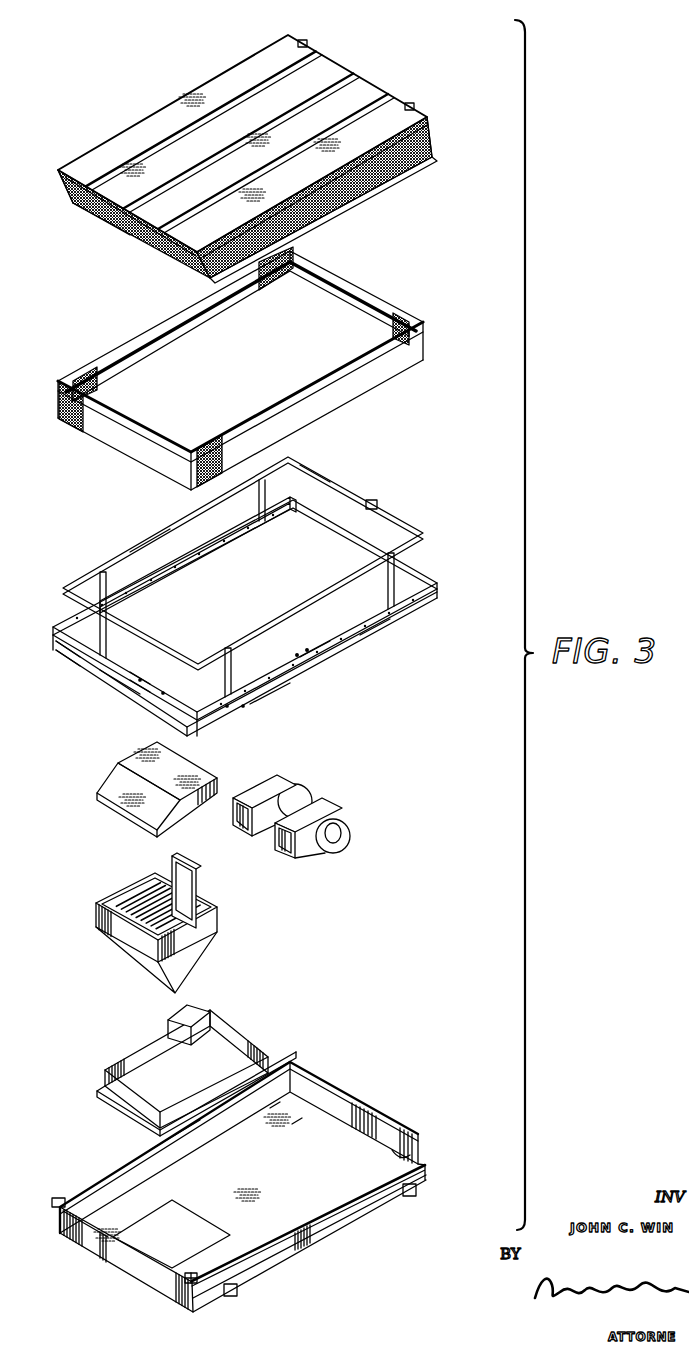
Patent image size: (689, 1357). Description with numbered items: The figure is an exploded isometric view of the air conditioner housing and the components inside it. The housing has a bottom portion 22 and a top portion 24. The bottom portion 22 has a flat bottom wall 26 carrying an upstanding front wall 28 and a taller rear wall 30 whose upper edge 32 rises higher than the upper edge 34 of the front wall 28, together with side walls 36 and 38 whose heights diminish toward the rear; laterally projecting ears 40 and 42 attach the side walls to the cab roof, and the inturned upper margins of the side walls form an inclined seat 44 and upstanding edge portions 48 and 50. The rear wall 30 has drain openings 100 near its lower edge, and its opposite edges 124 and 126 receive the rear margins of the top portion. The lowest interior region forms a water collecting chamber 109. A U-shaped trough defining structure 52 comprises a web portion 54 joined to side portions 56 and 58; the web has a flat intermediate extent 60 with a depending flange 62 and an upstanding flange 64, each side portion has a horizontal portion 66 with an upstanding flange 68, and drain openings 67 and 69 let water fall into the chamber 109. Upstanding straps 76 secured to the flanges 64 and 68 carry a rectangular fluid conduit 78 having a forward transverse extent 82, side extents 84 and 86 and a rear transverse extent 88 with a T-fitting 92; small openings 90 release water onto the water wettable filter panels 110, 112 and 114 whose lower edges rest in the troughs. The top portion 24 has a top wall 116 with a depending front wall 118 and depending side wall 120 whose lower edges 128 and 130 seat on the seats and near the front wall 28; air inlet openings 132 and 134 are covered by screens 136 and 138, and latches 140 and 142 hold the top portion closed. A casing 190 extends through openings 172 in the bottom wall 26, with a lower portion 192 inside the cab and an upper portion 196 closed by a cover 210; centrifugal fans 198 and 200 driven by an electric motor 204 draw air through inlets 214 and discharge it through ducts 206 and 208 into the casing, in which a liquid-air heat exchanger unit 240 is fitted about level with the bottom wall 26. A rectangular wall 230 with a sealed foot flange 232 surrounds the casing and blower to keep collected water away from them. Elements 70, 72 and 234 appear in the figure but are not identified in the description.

The bottom portion 22 is at (332, 1130).
The top portion 24 is at (360, 92).
The bottom wall 26 is at (305, 1112).
The front wall 28 is at (71, 1243).
The rear wall 30 is at (385, 1127).
The upper edge of rear wall 32 is at (372, 1112).
The upper edge of front wall 34 is at (101, 1242).
The side wall 36 is at (270, 1260).
The side wall 38 is at (117, 1190).
The laterally projecting ear 40 is at (232, 1297).
The laterally projecting ear 42 is at (412, 1197).
The inclined seat 44 is at (313, 1232).
The upstanding edge portion 48 is at (293, 1230).
The upstanding edge portion 50 is at (195, 1143).
The channel or trough defining structure 52 is at (332, 654).
The web or front end portion 54 is at (121, 688).
The side portion 56 is at (270, 690).
The side portion 58 is at (196, 556).
The flat horizontal intermediate extent 60 is at (93, 661).
The depending flange 62 is at (73, 656).
The upstanding flange 64 is at (140, 667).
The horizontal portion 66 is at (373, 622).
The drain openings 67 is at (163, 704).
The upstanding flange 68 is at (307, 642).
The drain openings 69 is at (243, 708).
The bracket 70 is at (188, 1284).
The bracket 72 is at (57, 1208).
The upstanding straps 76 is at (394, 580).
The rectangular fluid conduit 78 is at (408, 518).
The forward transverse extent 82 is at (142, 640).
The side extent 84 is at (390, 560).
The side extent 86 is at (151, 540).
The rear transverse extent 88 is at (326, 470).
The small openings 90 is at (307, 607).
The T-fitting 92 is at (373, 499).
The drain openings 100 is at (297, 1124).
The water collecting chamber 109 is at (402, 1154).
The air filter section or panel 110 is at (62, 424).
The air filter section or panel 112 is at (418, 360).
The air filter section or panel 114 is at (293, 282).
The top wall 116 is at (100, 162).
The depending front wall 118 is at (175, 256).
The depending side wall 120 is at (385, 185).
The edge of rear wall 124 is at (422, 1152).
The edge of rear wall 126 is at (283, 1078).
The lower edge of depending side wall 128 is at (345, 215).
The lower edge of depending front wall 130 is at (128, 230).
The opening 132 is at (78, 202).
The opening 134 is at (420, 150).
The protective metal screen or grid 136 is at (103, 212).
The protective metal screen or grid 138 is at (408, 168).
The latch 140 is at (306, 44).
The latch 142 is at (414, 108).
The openings 172 is at (188, 1214).
The casing 190 is at (93, 904).
The downwardly and rearwardly extending portion 192 is at (115, 946).
The casing portion 196 is at (214, 926).
The centrifugal fan 198 is at (285, 792).
The centrifugal fan 200 is at (320, 812).
The electric motor 204 is at (300, 800).
The discharge duct 206 is at (238, 797).
The discharge duct 208 is at (300, 858).
The casing cover 210 is at (130, 798).
The inlets 214 is at (340, 838).
The endless upstanding rectangular wall 230 is at (105, 1088).
The foot or outwardly directed flange 232 is at (153, 1122).
The tab 234 is at (238, 1028).
The liquid-air heat exchanger unit 240 is at (140, 915).